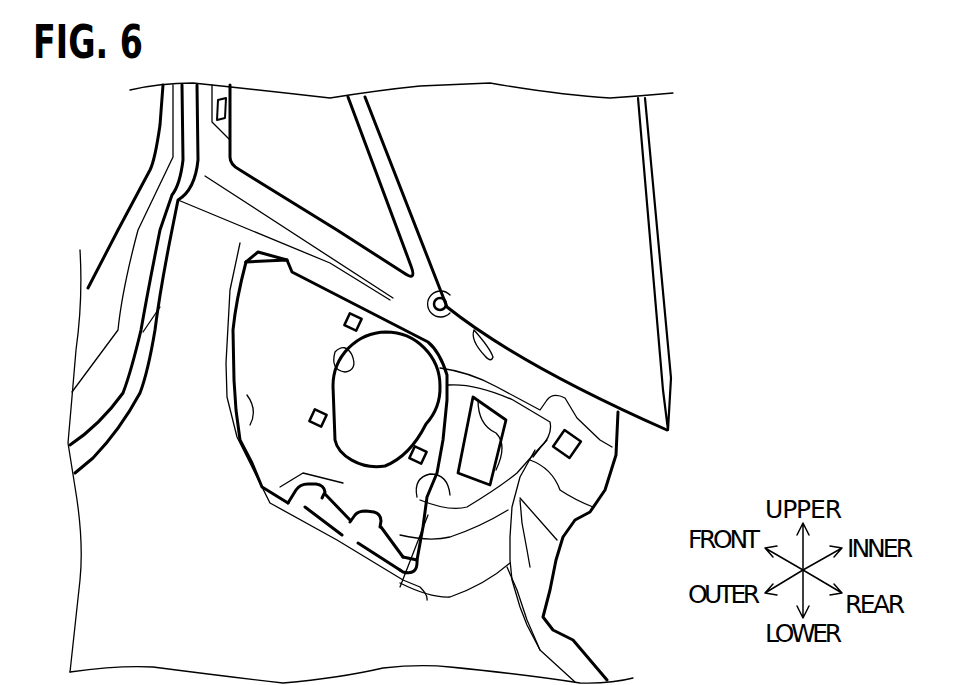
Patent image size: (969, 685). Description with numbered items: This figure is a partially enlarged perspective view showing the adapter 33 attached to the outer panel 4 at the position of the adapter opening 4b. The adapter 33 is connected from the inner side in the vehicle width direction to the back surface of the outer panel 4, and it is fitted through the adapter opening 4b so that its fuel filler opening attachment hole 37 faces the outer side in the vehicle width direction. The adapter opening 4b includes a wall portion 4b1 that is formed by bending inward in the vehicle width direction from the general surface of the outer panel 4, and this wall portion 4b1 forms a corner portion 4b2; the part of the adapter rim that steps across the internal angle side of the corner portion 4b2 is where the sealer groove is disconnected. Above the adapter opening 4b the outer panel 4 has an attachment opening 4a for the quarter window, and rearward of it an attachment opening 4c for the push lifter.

The outer panel 4 is at (140, 257).
The attachment opening for the quarter window 4a is at (282, 126).
The adapter opening 4b is at (437, 472).
The wall portion 4b1 is at (252, 428).
The corner portion 4b2 is at (260, 250).
The attachment opening for the push lifter 4c is at (483, 403).
The adapter 33 is at (343, 313).
The fuel filler opening attachment hole 37 is at (335, 350).